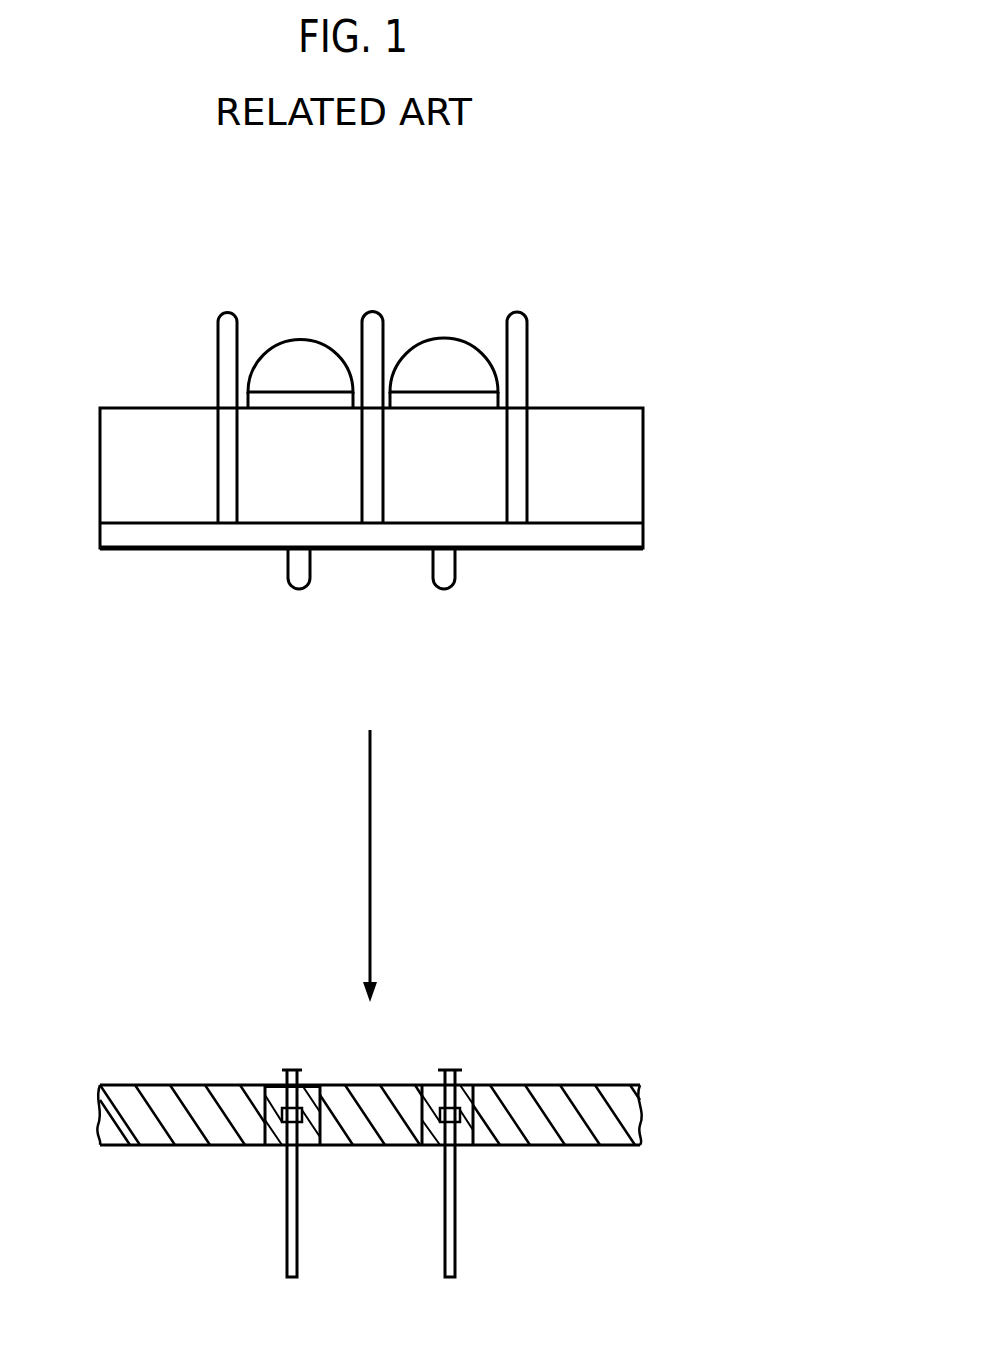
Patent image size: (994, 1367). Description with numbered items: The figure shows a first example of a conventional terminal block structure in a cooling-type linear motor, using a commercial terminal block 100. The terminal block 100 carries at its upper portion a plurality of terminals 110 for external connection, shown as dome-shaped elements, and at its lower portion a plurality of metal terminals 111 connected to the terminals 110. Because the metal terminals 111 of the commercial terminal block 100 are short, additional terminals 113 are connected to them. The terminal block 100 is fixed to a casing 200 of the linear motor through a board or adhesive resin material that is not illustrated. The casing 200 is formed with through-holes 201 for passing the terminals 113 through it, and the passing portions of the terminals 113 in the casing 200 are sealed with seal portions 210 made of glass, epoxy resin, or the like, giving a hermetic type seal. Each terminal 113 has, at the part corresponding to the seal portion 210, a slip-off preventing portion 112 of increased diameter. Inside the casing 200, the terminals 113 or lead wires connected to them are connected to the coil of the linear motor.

The terminal block 100 is at (582, 398).
The terminal 110 is at (301, 339).
The metal terminal 111 is at (299, 589).
The slip-off preventing portion 112 is at (270, 1150).
The terminal 113 is at (458, 1075).
The casing 200 is at (645, 1112).
The through-hole 201 is at (430, 1150).
The seal portion 210 is at (275, 1090).